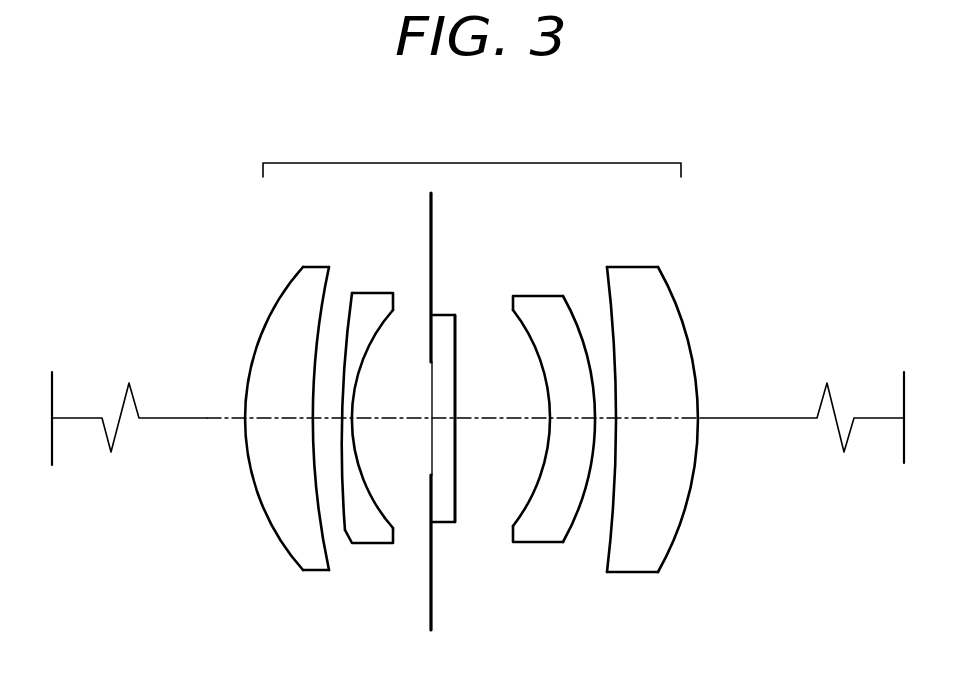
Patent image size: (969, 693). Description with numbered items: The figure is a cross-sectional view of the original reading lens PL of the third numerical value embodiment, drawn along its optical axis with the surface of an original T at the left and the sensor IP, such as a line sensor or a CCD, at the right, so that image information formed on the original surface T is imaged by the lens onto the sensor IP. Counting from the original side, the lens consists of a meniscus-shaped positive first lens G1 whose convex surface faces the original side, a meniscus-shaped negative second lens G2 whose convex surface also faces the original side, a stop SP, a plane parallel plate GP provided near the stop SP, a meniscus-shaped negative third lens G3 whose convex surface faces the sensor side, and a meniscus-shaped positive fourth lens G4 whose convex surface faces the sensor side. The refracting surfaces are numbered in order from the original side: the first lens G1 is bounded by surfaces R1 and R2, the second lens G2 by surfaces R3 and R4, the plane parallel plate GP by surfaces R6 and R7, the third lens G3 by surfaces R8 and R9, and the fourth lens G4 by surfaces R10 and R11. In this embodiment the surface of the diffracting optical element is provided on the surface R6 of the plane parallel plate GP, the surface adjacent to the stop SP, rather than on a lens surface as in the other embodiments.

The first lens G1 is at (305, 416).
The second lens G2 is at (372, 416).
The third lens G3 is at (537, 422).
The fourth lens G4 is at (634, 424).
The stop SP is at (468, 402).
The plane parallel plate GP is at (461, 417).
The original reading lens PL is at (472, 153).
The surface of an original T is at (52, 388).
The sensor IP is at (904, 388).
The first lens surface R1 is at (282, 546).
The second lens surface R2 is at (328, 543).
The third lens surface R3 is at (340, 532).
The fourth lens surface R4 is at (372, 508).
The sixth surface R6 is at (432, 460).
The seventh surface R7 is at (456, 492).
The eighth lens surface R8 is at (530, 497).
The ninth lens surface R9 is at (573, 532).
The tenth lens surface R10 is at (608, 515).
The eleventh lens surface R11 is at (668, 550).